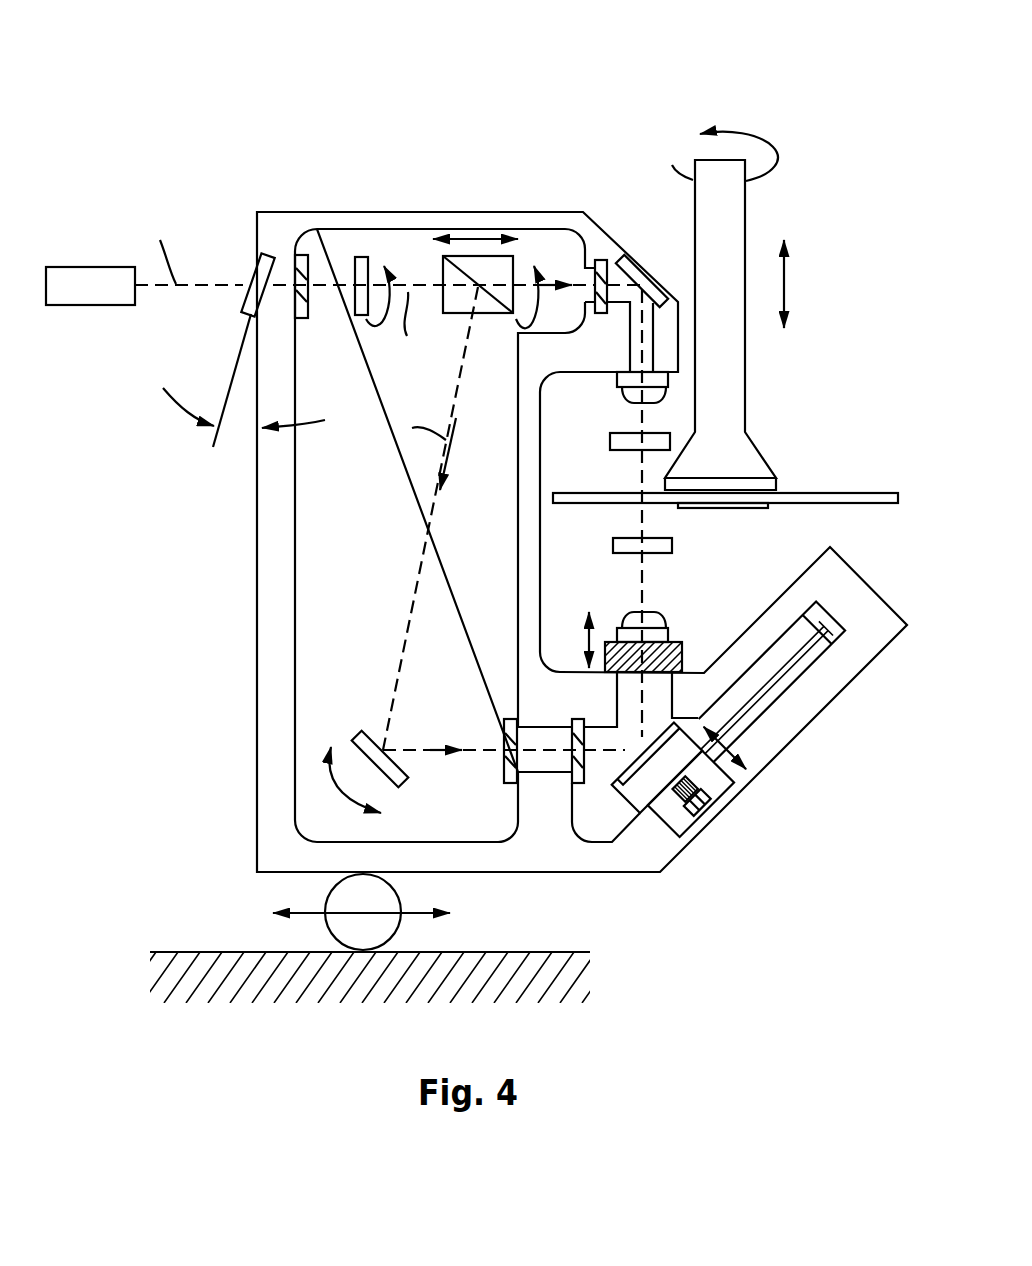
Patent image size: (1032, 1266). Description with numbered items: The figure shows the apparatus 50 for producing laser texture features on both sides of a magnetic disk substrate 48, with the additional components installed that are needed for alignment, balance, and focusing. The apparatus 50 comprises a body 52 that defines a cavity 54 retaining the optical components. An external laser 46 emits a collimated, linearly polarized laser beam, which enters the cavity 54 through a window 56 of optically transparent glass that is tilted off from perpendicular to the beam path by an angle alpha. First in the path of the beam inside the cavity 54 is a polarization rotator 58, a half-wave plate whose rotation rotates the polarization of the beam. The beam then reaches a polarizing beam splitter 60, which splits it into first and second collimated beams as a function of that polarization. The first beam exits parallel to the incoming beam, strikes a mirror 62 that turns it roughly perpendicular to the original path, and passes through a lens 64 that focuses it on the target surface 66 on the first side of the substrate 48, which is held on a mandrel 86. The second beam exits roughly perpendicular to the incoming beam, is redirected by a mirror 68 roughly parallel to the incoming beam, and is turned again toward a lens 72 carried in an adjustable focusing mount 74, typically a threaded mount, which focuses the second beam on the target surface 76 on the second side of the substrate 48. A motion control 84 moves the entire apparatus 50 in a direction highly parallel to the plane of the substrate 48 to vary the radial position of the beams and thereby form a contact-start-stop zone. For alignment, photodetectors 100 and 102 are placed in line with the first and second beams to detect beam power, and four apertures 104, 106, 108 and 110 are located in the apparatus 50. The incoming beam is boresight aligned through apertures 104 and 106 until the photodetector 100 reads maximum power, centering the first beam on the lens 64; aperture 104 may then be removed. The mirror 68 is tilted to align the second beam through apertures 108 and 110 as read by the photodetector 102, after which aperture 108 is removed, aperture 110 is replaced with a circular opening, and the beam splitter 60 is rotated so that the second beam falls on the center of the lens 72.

The laser 46 is at (82, 306).
The substrate 48 is at (893, 493).
The apparatus 50 is at (458, 84).
The body 52 is at (257, 588).
The cavity 54 is at (330, 527).
The window 56 is at (255, 265).
The polarization rotator 58 is at (356, 262).
The polarizing beam splitter 60 is at (478, 257).
The mirror 62 is at (628, 263).
The lens 64 is at (622, 396).
The target surface 66 is at (810, 492).
The mirror 68 is at (360, 735).
The lens 72 is at (660, 612).
The adjustable focusing mount 74 is at (682, 657).
The target surface 76 is at (808, 512).
The motion control 84 is at (330, 895).
The mandrel 86 is at (767, 448).
The photodetector 100 is at (612, 450).
The photodetector 102 is at (612, 550).
The aperture 104 is at (303, 318).
The aperture 106 is at (600, 260).
The aperture 108 is at (504, 727).
The aperture 110 is at (572, 730).